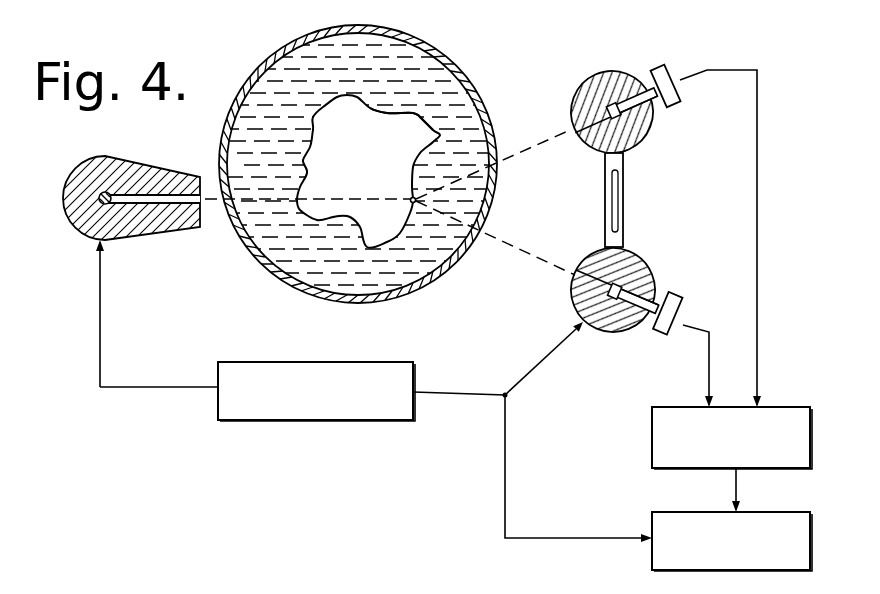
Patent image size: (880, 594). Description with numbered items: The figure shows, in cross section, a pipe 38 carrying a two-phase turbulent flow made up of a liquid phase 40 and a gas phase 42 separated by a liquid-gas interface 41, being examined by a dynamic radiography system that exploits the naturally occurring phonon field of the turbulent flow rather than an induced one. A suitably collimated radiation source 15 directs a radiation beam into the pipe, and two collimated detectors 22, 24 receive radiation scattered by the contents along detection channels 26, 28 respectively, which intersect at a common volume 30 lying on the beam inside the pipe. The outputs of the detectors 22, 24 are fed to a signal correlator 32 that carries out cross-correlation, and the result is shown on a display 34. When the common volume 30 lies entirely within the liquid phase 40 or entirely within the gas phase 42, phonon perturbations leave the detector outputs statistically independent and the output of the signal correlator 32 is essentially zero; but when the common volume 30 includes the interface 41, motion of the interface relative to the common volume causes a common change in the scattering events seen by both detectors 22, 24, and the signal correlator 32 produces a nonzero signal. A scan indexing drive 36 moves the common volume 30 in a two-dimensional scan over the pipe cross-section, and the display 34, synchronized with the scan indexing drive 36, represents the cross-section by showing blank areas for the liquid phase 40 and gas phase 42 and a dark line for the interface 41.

The radiation source 15 is at (70, 236).
The detector 22 is at (600, 72).
The detector 24 is at (632, 264).
The detection channel 26 is at (507, 158).
The detection channel 28 is at (485, 236).
The common volume 30 is at (410, 197).
The signal correlator 32 is at (800, 418).
The display 34 is at (800, 522).
The scan indexing drive 36 is at (392, 367).
The pipe 38 is at (413, 36).
The liquid phase 40 is at (447, 98).
The liquid-gas interface 41 is at (418, 112).
The gas phase 42 is at (441, 135).